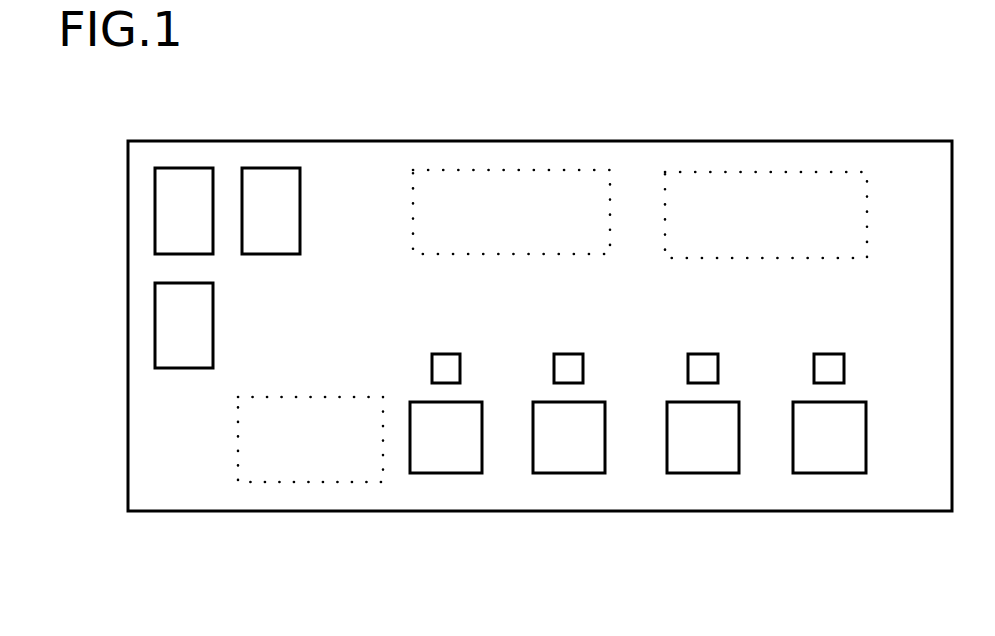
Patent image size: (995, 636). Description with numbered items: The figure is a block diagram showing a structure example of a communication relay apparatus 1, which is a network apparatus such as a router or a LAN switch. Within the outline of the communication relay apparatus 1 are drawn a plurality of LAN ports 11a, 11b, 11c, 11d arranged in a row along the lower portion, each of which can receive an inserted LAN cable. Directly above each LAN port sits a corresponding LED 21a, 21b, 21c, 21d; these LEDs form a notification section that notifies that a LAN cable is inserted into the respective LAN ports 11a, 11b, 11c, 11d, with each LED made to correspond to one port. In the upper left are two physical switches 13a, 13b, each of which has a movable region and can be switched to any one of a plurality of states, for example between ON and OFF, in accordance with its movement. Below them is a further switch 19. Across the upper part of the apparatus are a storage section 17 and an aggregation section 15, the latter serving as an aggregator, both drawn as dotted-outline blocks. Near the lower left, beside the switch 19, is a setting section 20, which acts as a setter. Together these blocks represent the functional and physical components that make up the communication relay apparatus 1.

The communication relay apparatus 1 is at (540, 289).
The LAN port 11a is at (443, 473).
The LAN port 11b is at (566, 473).
The LAN port 11c is at (700, 473).
The LAN port 11d is at (826, 473).
The switch 13a is at (190, 168).
The switch 13b is at (276, 168).
The aggregation section 15 is at (766, 172).
The storage section 17 is at (513, 170).
The switch 19 is at (181, 368).
The setting section 20 is at (313, 482).
The LED 21a is at (450, 354).
The LED 21b is at (572, 354).
The LED 21c is at (707, 354).
The LED 21d is at (833, 354).